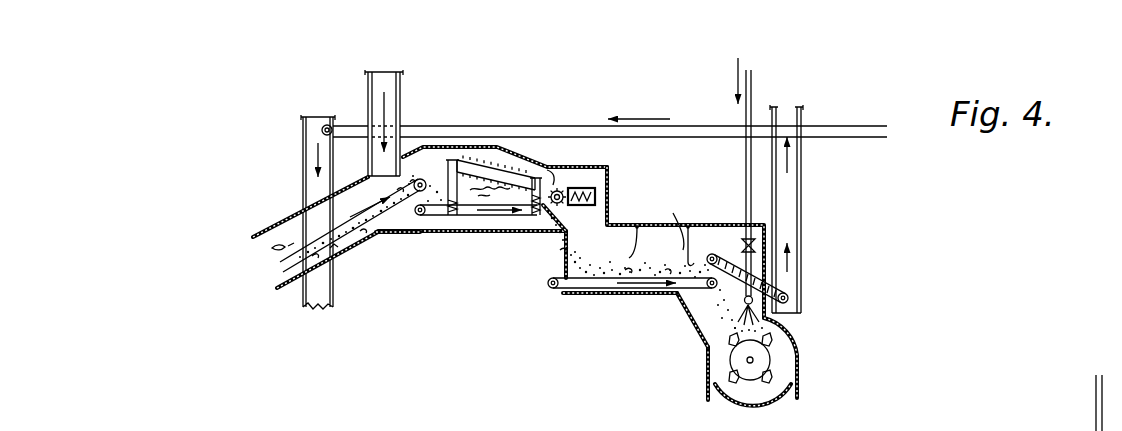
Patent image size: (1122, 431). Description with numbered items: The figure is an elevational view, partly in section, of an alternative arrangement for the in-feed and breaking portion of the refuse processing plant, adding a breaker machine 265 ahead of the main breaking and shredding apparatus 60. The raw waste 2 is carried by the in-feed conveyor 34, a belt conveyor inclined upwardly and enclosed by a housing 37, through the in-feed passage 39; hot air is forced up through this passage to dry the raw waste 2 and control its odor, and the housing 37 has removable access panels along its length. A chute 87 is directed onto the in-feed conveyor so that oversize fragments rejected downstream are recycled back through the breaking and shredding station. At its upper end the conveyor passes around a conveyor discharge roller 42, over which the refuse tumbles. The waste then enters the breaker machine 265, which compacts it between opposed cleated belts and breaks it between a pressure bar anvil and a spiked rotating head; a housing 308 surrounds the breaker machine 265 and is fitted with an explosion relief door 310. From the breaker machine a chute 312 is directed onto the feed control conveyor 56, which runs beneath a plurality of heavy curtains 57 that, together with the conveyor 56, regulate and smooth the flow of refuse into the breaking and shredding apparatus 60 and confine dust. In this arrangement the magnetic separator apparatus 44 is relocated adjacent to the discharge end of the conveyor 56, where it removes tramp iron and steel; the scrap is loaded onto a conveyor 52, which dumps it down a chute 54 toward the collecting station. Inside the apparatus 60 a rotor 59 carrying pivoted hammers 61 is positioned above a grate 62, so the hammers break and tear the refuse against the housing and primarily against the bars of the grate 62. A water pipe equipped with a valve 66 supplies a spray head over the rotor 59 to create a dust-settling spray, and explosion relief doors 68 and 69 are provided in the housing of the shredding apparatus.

The raw waste 2 is at (583, 255).
The in-feed conveyor 34 is at (280, 258).
The conveyor housing 37 is at (257, 236).
The in-feed passage 39 is at (356, 192).
The conveyor discharge roller 42 is at (380, 234).
The magnetic separator apparatus 44 is at (784, 290).
The conveyor 52 is at (422, 125).
The chute 54 is at (303, 180).
The feed control conveyor 56 is at (598, 293).
The heavy curtains 57 is at (653, 224).
The rotor 59 is at (773, 358).
The breaking and shredding apparatus 60 is at (804, 333).
The pivoted hammers 61 is at (773, 377).
The grate 62 is at (723, 407).
The valve 66 is at (743, 245).
The explosion relief door 68 is at (687, 310).
The explosion relief door 69 is at (765, 240).
The chute 87 is at (367, 88).
The breaker machine 265 is at (505, 157).
The housing 308 is at (590, 162).
The explosion relief door 310 is at (610, 193).
The chute 312 is at (546, 213).